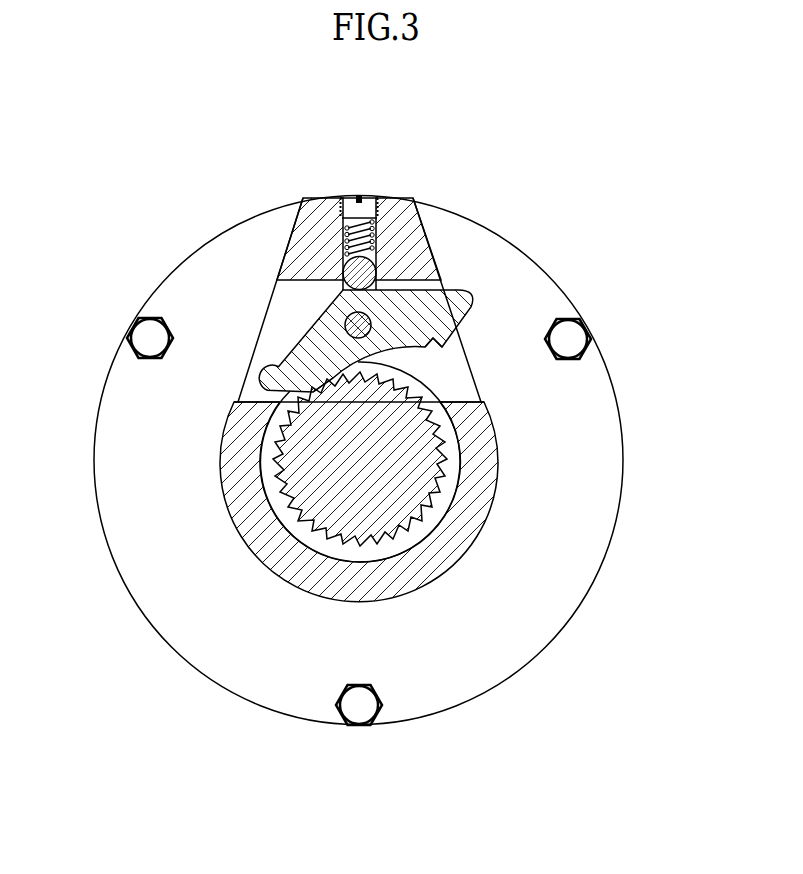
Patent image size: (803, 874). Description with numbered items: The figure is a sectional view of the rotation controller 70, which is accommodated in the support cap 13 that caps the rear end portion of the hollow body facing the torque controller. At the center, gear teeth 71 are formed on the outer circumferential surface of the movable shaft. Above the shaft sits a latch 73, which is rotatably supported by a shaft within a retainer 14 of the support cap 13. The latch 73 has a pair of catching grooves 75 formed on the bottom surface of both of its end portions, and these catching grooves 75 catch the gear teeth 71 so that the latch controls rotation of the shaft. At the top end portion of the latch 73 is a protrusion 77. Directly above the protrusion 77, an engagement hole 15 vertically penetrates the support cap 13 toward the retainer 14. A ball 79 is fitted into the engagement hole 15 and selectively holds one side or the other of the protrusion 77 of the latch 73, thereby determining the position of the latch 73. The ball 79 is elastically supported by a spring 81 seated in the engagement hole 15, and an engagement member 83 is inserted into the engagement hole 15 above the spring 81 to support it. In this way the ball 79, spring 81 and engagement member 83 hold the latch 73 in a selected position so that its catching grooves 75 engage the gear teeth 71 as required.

The support cap 13 is at (593, 533).
The retainer 14 is at (270, 336).
The engagement hole 15 is at (400, 203).
The rotation controller 70 is at (480, 370).
The gear teeth 71 is at (420, 514).
The latch 73 is at (460, 308).
The catching grooves 75 is at (310, 392).
The protrusion 77 is at (343, 290).
The ball 79 is at (377, 271).
The spring 81 is at (373, 227).
The engagement member 83 is at (352, 198).